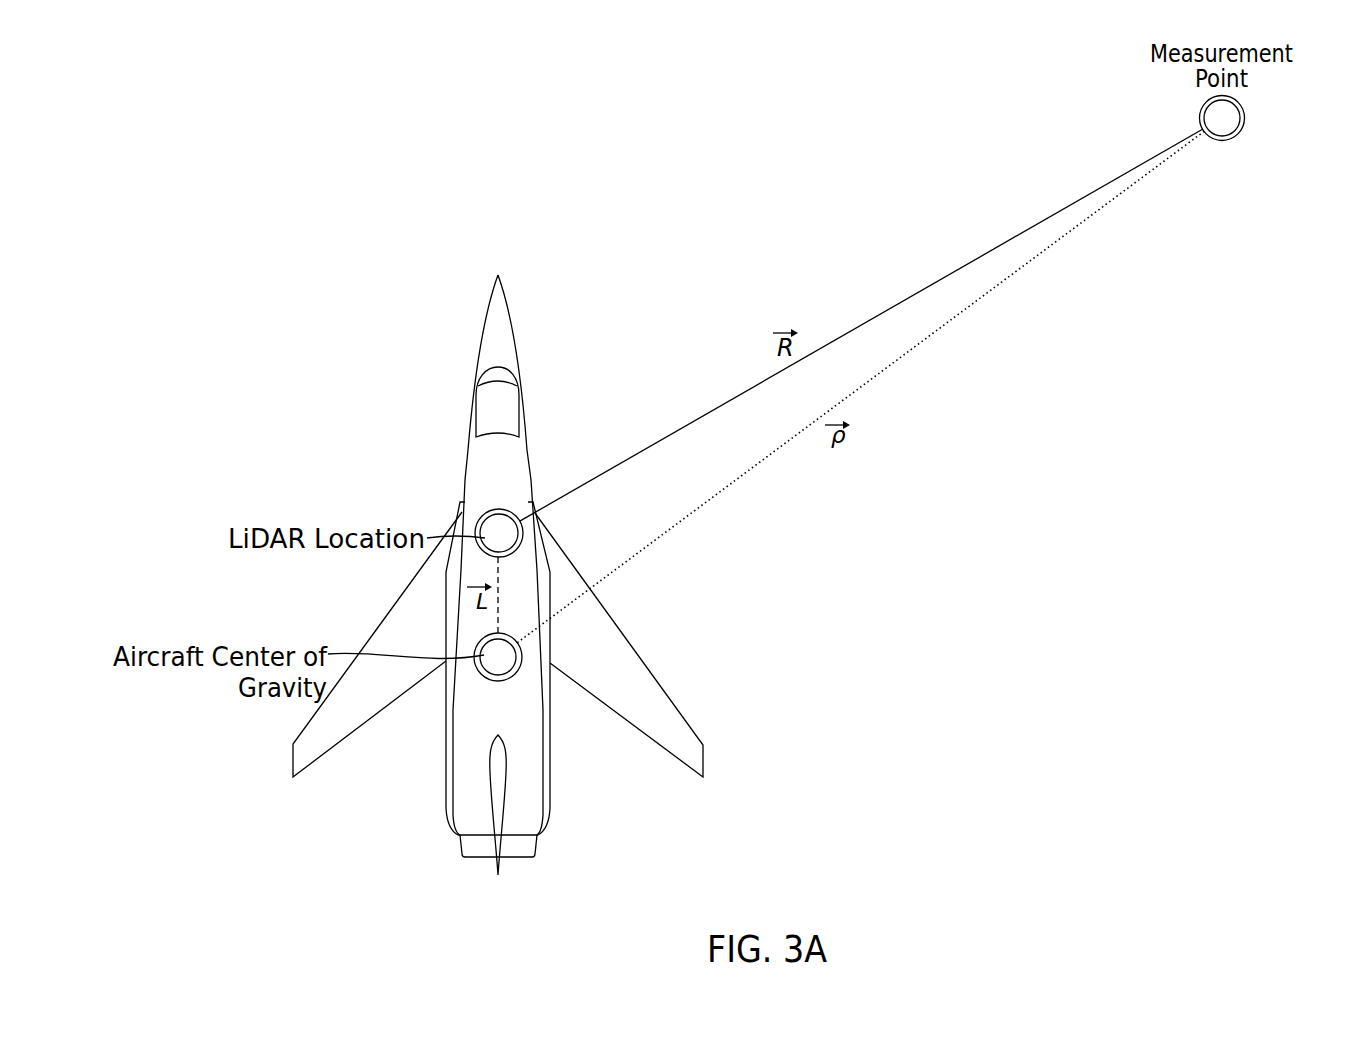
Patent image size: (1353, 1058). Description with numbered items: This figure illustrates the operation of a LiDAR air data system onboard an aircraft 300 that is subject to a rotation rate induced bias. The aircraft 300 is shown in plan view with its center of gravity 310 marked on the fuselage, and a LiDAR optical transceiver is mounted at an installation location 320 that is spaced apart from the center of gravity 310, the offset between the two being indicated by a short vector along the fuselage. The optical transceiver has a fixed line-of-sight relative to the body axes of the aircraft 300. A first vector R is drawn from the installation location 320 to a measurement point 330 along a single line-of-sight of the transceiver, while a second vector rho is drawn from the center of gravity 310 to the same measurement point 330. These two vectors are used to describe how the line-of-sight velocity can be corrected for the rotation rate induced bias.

The aircraft 300 is at (684, 665).
The center of gravity 310 is at (478, 640).
The installation location 320 is at (476, 519).
The measurement point 330 is at (1246, 118).